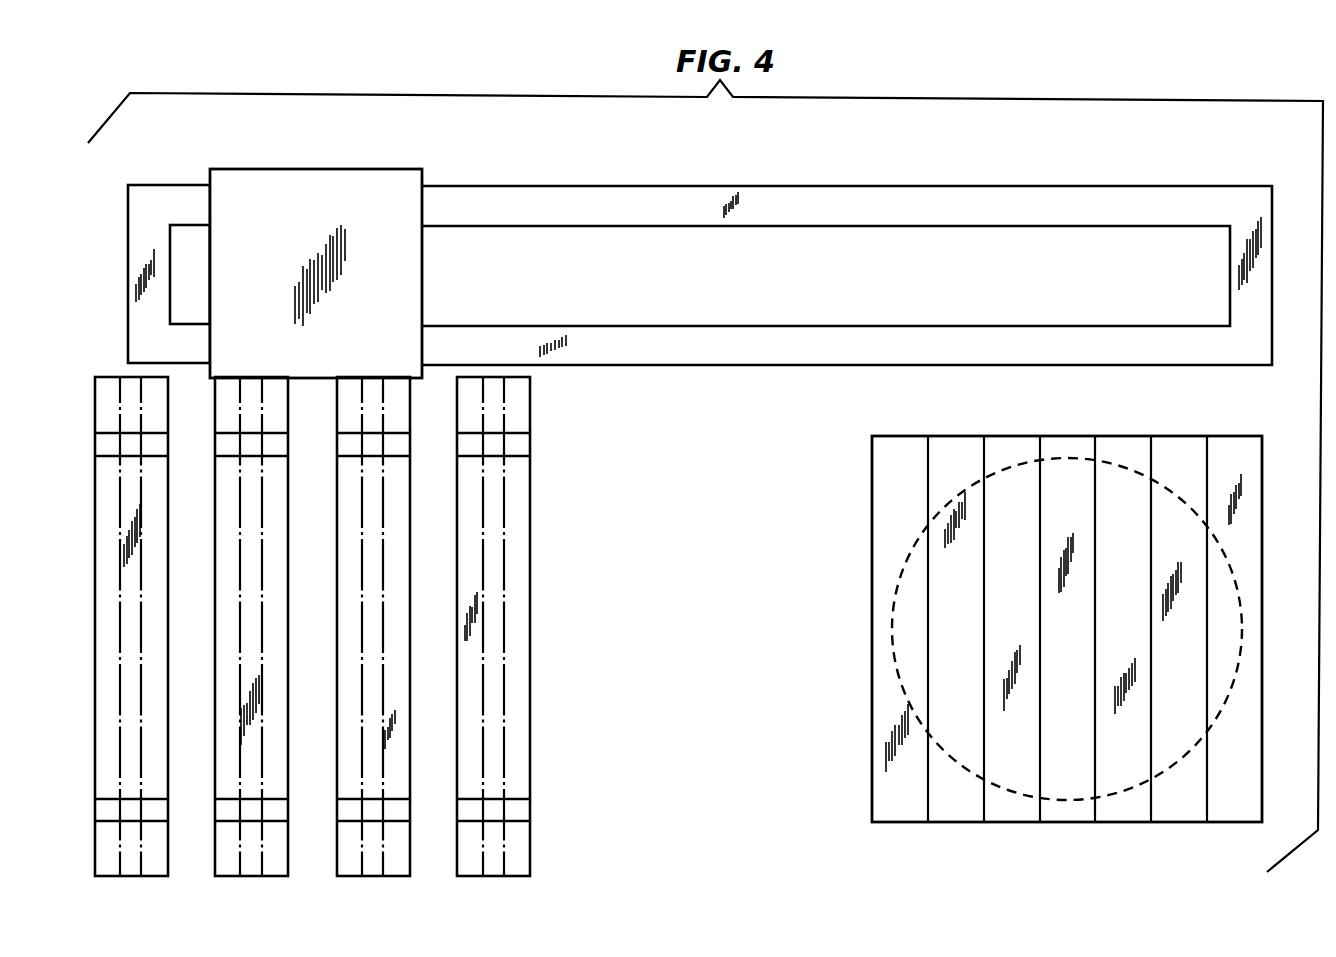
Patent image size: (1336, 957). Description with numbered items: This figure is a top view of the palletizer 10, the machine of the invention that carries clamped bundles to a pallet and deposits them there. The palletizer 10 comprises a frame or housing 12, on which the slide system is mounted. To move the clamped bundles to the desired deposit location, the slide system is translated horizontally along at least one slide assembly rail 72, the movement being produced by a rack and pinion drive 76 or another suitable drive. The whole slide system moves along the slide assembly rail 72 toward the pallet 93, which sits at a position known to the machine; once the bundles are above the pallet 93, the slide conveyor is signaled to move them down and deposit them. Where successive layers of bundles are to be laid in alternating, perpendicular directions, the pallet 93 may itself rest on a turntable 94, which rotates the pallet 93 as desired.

The palletizer 10 is at (648, 488).
The frame or housing 12 is at (422, 273).
The slide assembly rail 72 is at (514, 197).
The rack and pinion drive 76 is at (718, 353).
The pallet 93 is at (827, 723).
The turntable 94 is at (967, 770).